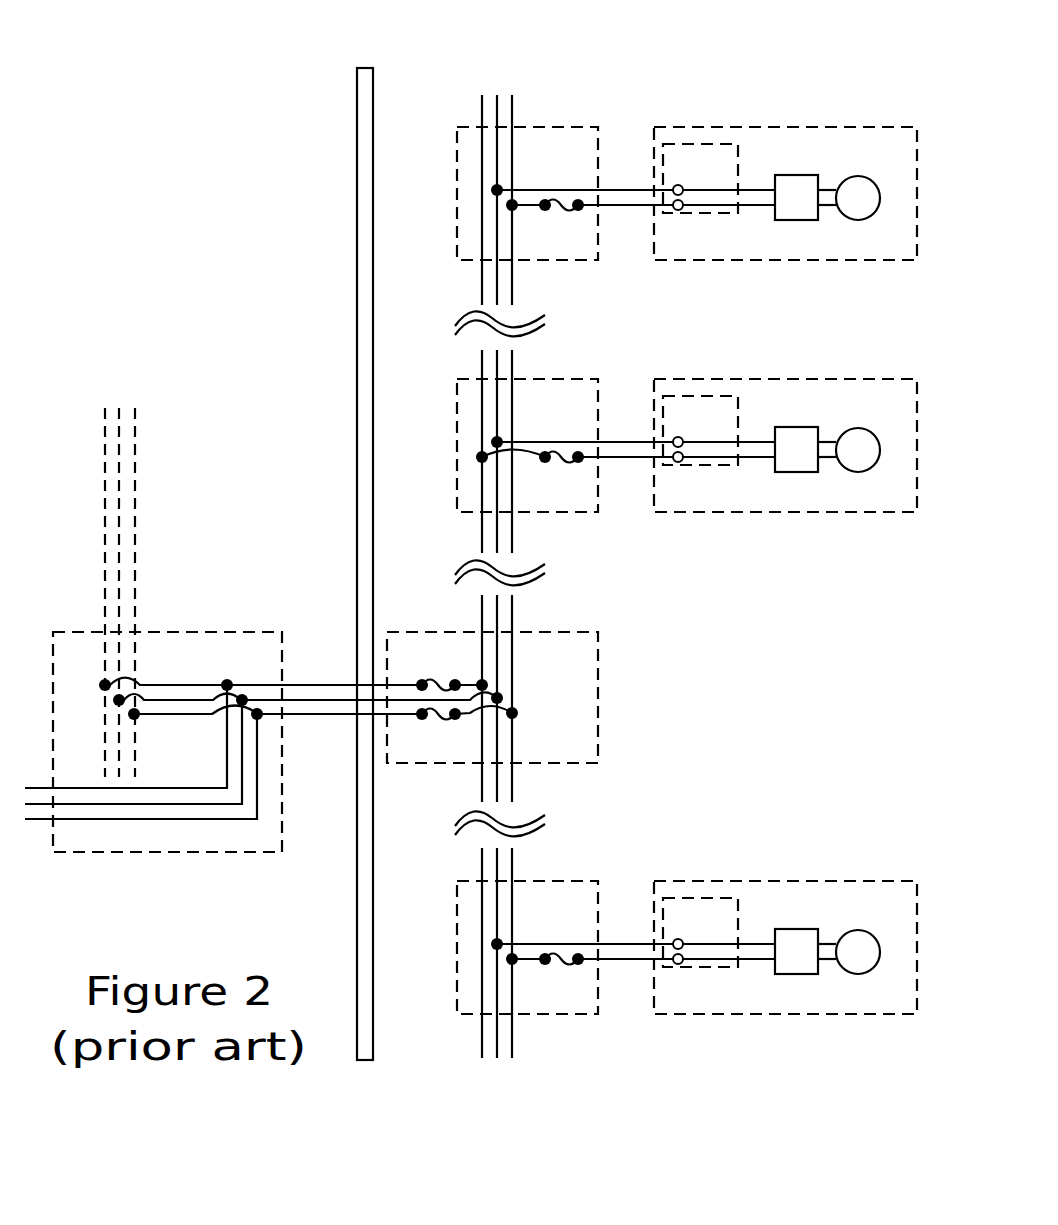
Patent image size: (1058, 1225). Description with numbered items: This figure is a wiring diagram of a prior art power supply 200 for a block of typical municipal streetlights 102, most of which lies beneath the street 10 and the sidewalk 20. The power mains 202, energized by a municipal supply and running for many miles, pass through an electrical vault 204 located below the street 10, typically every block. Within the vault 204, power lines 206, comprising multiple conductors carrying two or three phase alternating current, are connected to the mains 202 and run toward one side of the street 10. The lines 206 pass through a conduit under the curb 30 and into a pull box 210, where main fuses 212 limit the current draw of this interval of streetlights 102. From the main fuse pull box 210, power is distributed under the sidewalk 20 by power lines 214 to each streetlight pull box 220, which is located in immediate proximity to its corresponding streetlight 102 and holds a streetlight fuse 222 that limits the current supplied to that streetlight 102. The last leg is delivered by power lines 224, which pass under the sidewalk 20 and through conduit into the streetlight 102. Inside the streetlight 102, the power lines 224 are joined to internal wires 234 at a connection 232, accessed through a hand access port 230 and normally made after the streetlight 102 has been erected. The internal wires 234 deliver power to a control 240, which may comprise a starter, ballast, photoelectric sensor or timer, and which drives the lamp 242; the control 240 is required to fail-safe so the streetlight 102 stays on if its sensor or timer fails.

The power supply 200 is at (624, 58).
The street 10 is at (244, 363).
The sidewalk 20 is at (719, 711).
The curb 30 is at (373, 818).
The streetlight 102 is at (735, 126).
The power mains 202 is at (135, 524).
The electrical vault 204 is at (237, 852).
The power lines 206 is at (37, 822).
The pull box 210 is at (592, 631).
The main fuses 212 is at (450, 717).
The power lines 214 is at (482, 276).
The streetlight pull box 220 is at (576, 126).
The streetlight fuse 222 is at (577, 208).
The power lines 224 is at (647, 207).
The hand access port 230 is at (740, 158).
The connection 232 is at (678, 211).
The internal wires 234 is at (758, 208).
The control 240 is at (805, 175).
The lamp 242 is at (852, 218).